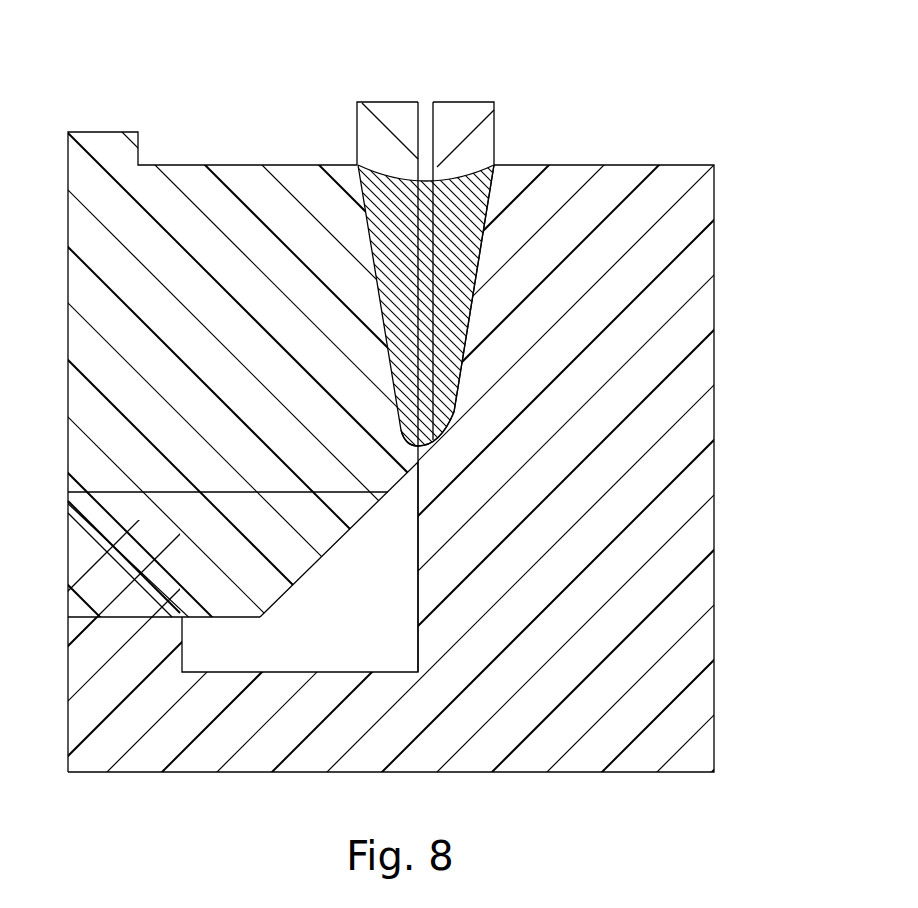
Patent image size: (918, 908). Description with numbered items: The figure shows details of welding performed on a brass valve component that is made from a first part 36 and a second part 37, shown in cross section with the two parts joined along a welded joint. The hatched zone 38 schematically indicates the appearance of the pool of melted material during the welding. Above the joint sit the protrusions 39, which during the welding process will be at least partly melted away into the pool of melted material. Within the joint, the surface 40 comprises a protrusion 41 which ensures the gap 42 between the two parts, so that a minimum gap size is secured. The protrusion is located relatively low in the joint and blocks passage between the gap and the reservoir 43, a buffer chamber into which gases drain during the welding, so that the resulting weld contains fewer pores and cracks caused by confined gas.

The first part 36 is at (647, 228).
The second part 37 is at (158, 217).
The hatched zone 38 is at (465, 223).
The protrusions 39 is at (378, 133).
The surface 40 is at (428, 317).
The protrusion 41 is at (402, 430).
The gap 42 is at (445, 285).
The reservoir 43 is at (315, 647).